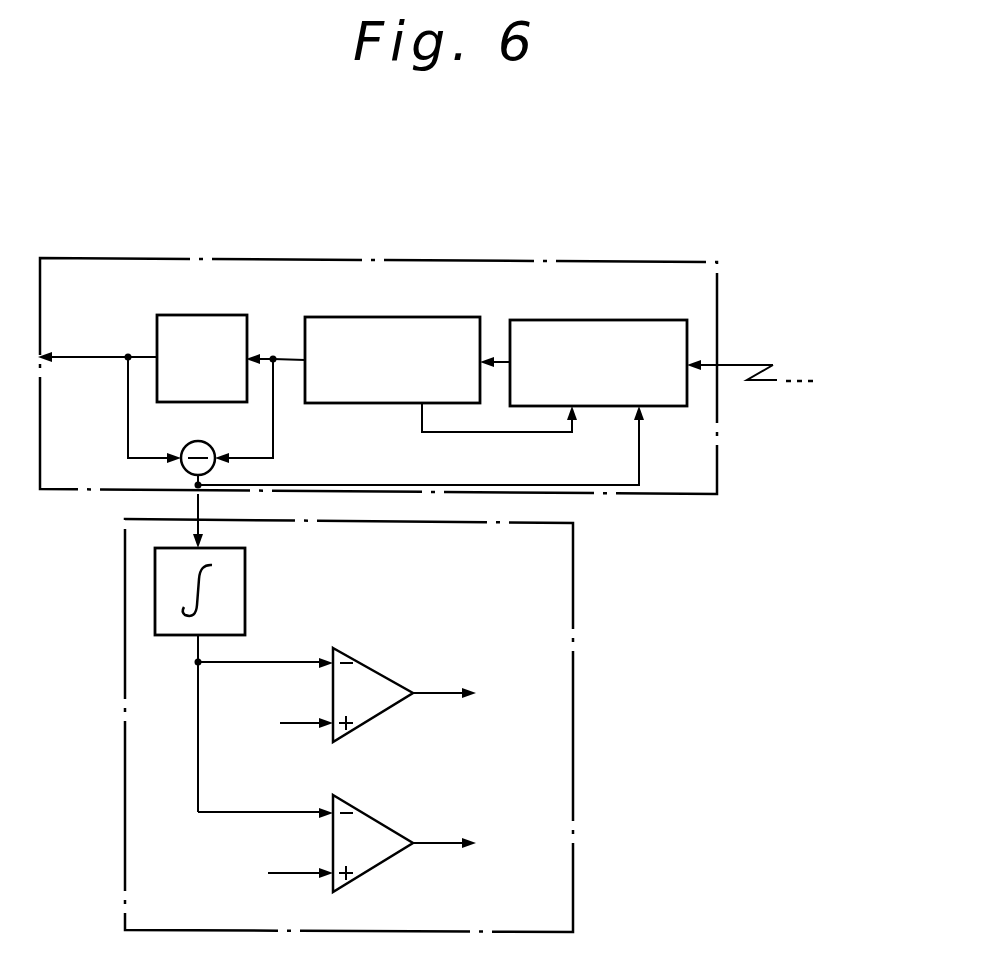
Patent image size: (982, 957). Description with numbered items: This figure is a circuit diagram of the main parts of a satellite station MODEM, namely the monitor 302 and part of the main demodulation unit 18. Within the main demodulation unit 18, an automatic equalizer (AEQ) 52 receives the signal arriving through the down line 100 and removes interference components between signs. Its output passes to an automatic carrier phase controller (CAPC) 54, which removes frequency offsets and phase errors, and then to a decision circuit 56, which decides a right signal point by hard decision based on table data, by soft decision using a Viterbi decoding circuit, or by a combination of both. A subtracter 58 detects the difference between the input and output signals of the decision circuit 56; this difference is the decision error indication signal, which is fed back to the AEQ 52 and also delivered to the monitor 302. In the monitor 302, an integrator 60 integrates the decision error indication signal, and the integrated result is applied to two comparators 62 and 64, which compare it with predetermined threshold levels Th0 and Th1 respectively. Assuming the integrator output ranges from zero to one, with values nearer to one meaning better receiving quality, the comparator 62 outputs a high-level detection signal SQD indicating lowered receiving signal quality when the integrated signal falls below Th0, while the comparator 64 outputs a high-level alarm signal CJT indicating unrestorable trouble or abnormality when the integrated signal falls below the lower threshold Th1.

The main demodulation unit 18 is at (516, 250).
The automatic equalizer (AEQ) 52 is at (559, 320).
The automatic carrier phase controller (CAPC) 54 is at (357, 317).
The decision circuit 56 is at (203, 315).
The subtracter 58 is at (200, 441).
The integrator 60 is at (245, 577).
The comparator 62 is at (377, 672).
The comparator 64 is at (377, 822).
The down line 100 is at (845, 382).
The monitor 302 is at (588, 688).